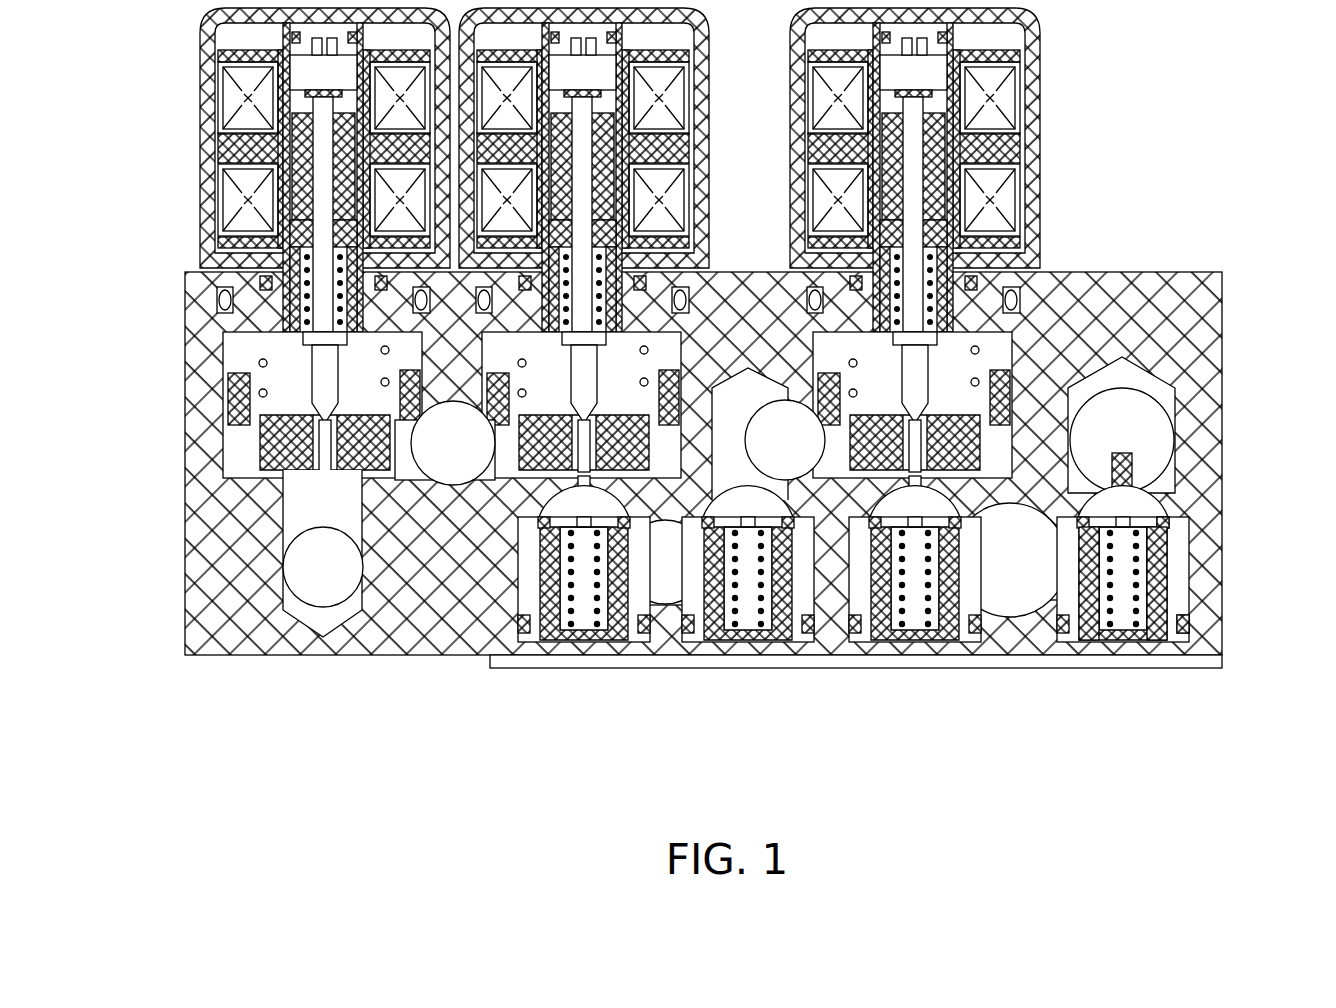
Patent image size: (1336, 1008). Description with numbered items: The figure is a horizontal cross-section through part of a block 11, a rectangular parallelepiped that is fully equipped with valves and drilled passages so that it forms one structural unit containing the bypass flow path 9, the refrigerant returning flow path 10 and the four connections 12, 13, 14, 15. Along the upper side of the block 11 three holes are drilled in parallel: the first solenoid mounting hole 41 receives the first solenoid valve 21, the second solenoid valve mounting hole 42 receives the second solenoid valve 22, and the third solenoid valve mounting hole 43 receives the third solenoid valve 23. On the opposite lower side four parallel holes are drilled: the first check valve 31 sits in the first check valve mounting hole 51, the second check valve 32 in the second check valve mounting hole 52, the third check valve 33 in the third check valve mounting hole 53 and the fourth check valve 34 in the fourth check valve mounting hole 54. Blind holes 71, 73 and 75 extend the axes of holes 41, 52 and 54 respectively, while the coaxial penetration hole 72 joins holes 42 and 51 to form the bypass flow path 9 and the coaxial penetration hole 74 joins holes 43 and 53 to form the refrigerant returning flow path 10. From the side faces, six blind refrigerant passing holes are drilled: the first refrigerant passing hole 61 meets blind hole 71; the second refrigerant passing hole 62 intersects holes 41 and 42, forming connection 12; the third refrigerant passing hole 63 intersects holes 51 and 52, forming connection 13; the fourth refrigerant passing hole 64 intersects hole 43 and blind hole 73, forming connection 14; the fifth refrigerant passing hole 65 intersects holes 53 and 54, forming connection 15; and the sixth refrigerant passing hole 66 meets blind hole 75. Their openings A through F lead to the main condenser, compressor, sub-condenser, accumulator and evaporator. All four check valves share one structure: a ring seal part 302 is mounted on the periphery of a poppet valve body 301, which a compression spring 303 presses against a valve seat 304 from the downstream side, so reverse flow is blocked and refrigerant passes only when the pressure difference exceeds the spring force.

The bypass flow path 9 is at (361, 622).
The refrigerant returning flow path 10 is at (1122, 136).
The block 11 is at (1187, 281).
The connection 12 is at (415, 597).
The connection 13 is at (642, 652).
The connection 14 is at (785, 571).
The connection 15 is at (1010, 650).
The first solenoid valve 21 is at (198, 92).
The second solenoid valve 22 is at (710, 92).
The third solenoid valve 23 is at (1041, 92).
The first check valve 31 is at (563, 647).
The second check valve 32 is at (728, 652).
The third check valve 33 is at (930, 640).
The fourth check valve 34 is at (1095, 640).
The first solenoid mounting hole 41 is at (280, 487).
The second solenoid valve mounting hole 42 is at (687, 327).
The third solenoid valve mounting hole 43 is at (1020, 400).
The first check valve mounting hole 51 is at (510, 592).
The second check valve mounting hole 52 is at (797, 575).
The third check valve mounting hole 53 is at (867, 575).
The fourth check valve mounting hole 54 is at (1233, 594).
The first refrigerant passing hole 61 is at (300, 605).
The second refrigerant passing hole 62 is at (457, 487).
The third refrigerant passing hole 63 is at (612, 650).
The fourth refrigerant passing hole 64 is at (795, 480).
The fifth refrigerant passing hole 65 is at (995, 615).
The sixth refrigerant passing hole 66 is at (1177, 401).
The blind hole 71 is at (283, 527).
The penetration hole 72 is at (431, 725).
The blind hole 73 is at (748, 366).
The penetration hole 74 is at (960, 495).
The blind hole 75 is at (1180, 462).
The valve body 301 is at (1190, 470).
The ring seal part 302 is at (1201, 525).
The compression spring 303 is at (1152, 561).
The valve seat 304 is at (1201, 490).